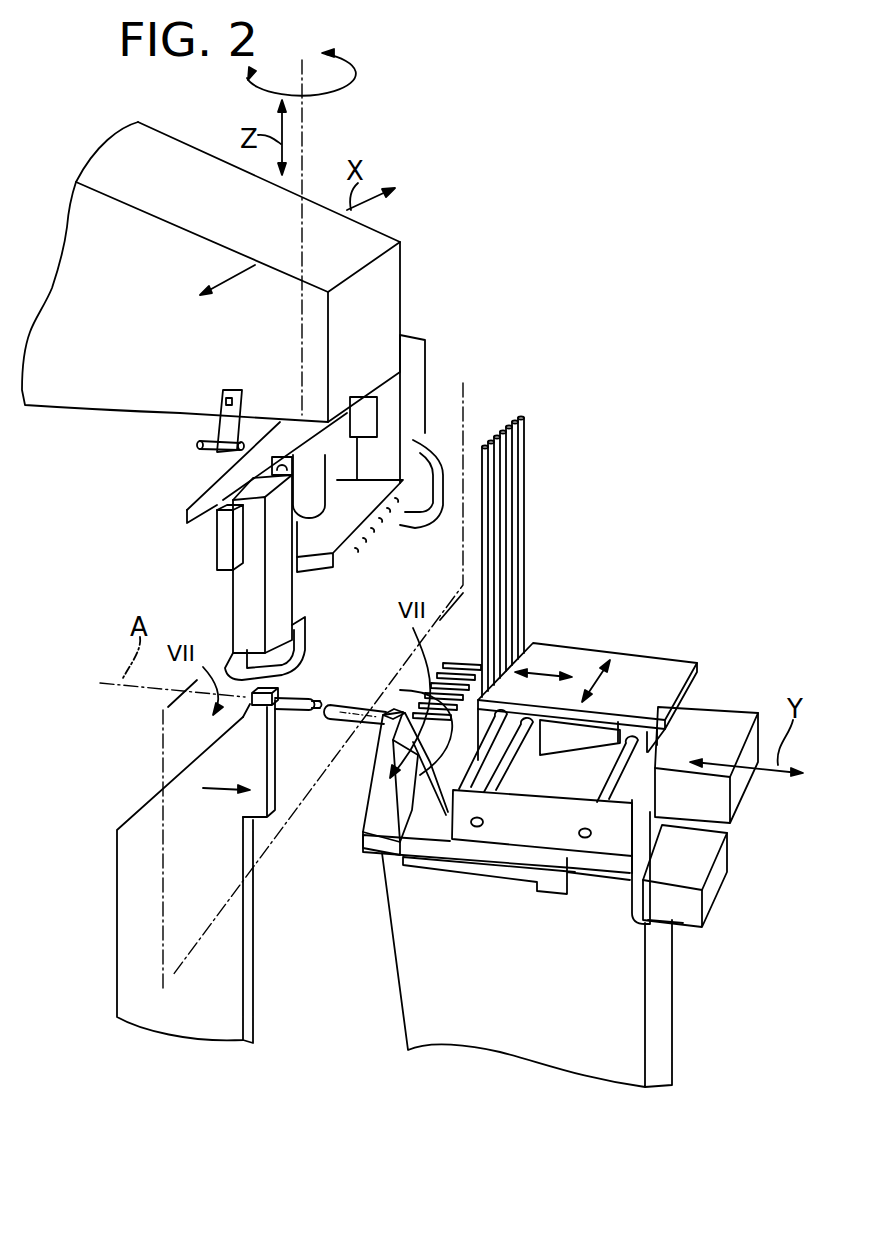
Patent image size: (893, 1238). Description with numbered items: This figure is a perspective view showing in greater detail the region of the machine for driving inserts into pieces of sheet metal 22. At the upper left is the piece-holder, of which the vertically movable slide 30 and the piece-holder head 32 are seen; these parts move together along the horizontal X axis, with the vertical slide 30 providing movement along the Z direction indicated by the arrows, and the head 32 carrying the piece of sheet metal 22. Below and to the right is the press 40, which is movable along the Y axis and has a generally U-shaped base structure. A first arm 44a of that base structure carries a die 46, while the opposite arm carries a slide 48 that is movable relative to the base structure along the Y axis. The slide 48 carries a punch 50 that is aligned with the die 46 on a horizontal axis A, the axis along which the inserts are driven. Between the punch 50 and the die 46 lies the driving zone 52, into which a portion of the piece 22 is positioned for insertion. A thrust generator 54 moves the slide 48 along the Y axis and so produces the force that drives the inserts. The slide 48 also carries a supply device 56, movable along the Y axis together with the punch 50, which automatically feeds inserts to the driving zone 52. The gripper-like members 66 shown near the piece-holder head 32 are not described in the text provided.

The vertically movable slide 30 is at (377, 240).
The piece-holder head 32 is at (447, 334).
The gripper 66 is at (427, 371).
The piece of sheet metal 22 is at (463, 412).
The supply device 56 is at (597, 630).
The die 46 is at (300, 708).
The driving zone 52 is at (320, 690).
The punch 50 is at (355, 702).
The slide 48 is at (392, 802).
The first arm 44a is at (133, 880).
The thrust generator 54 is at (708, 903).
The press 40 is at (689, 950).